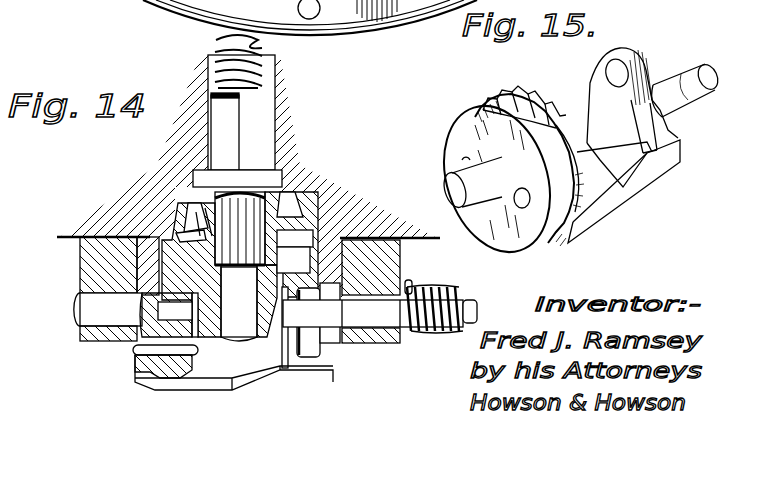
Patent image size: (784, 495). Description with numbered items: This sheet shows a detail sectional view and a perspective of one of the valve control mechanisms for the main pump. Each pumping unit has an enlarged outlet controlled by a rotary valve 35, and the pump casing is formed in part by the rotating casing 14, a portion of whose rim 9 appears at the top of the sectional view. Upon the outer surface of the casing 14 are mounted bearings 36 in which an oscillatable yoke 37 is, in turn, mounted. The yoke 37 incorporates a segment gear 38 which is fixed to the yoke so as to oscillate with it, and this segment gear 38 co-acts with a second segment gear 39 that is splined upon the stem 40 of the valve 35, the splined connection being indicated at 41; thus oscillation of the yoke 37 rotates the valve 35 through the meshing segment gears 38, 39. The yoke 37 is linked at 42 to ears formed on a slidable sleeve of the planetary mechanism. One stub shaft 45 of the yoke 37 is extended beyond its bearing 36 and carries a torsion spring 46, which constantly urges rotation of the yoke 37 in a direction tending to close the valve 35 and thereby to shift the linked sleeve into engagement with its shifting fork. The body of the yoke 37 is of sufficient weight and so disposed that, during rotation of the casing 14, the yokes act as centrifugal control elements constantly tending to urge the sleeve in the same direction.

In FIG. 14, the wheel rim 9 is at (193, 0).
In FIG. 14, the casing 14 is at (160, 181).
In FIG. 14, the valve 35 is at (258, 118).
In FIG. 14, the bearings 36 is at (86, 336).
In FIG. 14, the yoke 37 is at (300, 378).
In FIG. 15, the yoke 37 is at (610, 180).
In FIG. 14, the segment gear 38 is at (175, 378).
In FIG. 15, the segment gear 38 is at (513, 100).
In FIG. 14, the segment gear 39 is at (212, 222).
In FIG. 14, the stem 40 is at (245, 330).
In FIG. 14, the spline 41 is at (290, 203).
In FIG. 14, the link 42 is at (328, 362).
In FIG. 14, the stub shaft 45 is at (378, 322).
In FIG. 15, the stub shaft 45 is at (667, 80).
In FIG. 14, the torsion spring 46 is at (453, 295).